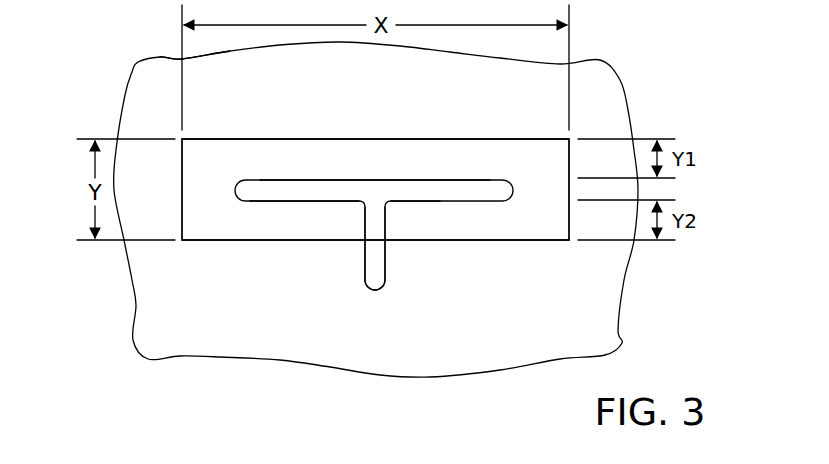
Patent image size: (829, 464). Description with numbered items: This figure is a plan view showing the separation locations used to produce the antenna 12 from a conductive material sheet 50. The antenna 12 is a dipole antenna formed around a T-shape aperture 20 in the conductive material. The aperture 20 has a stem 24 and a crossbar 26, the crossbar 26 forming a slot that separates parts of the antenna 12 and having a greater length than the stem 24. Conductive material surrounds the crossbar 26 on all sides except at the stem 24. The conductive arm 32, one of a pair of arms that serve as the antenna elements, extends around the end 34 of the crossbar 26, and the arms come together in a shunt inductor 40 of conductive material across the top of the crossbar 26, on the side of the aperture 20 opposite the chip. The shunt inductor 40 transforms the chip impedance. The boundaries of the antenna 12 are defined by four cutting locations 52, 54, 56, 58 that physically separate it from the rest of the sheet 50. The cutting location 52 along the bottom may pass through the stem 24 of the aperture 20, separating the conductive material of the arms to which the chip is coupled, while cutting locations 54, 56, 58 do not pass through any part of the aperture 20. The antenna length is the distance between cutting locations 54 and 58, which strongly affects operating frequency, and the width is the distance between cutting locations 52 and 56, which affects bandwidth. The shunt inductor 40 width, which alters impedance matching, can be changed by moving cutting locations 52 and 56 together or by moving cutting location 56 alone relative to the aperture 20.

The antenna 12 is at (135, 43).
The T-shape aperture 20 is at (446, 227).
The stem 24 is at (362, 263).
The crossbar 26 is at (316, 190).
The arm 32 is at (265, 222).
The end 34 is at (408, 228).
The shunt inductor 40 is at (425, 150).
The conductive material sheet 50 is at (607, 292).
The cutting location 52 is at (272, 243).
The cutting location 54 is at (181, 200).
The cutting location 56 is at (243, 139).
The cutting location 58 is at (571, 172).